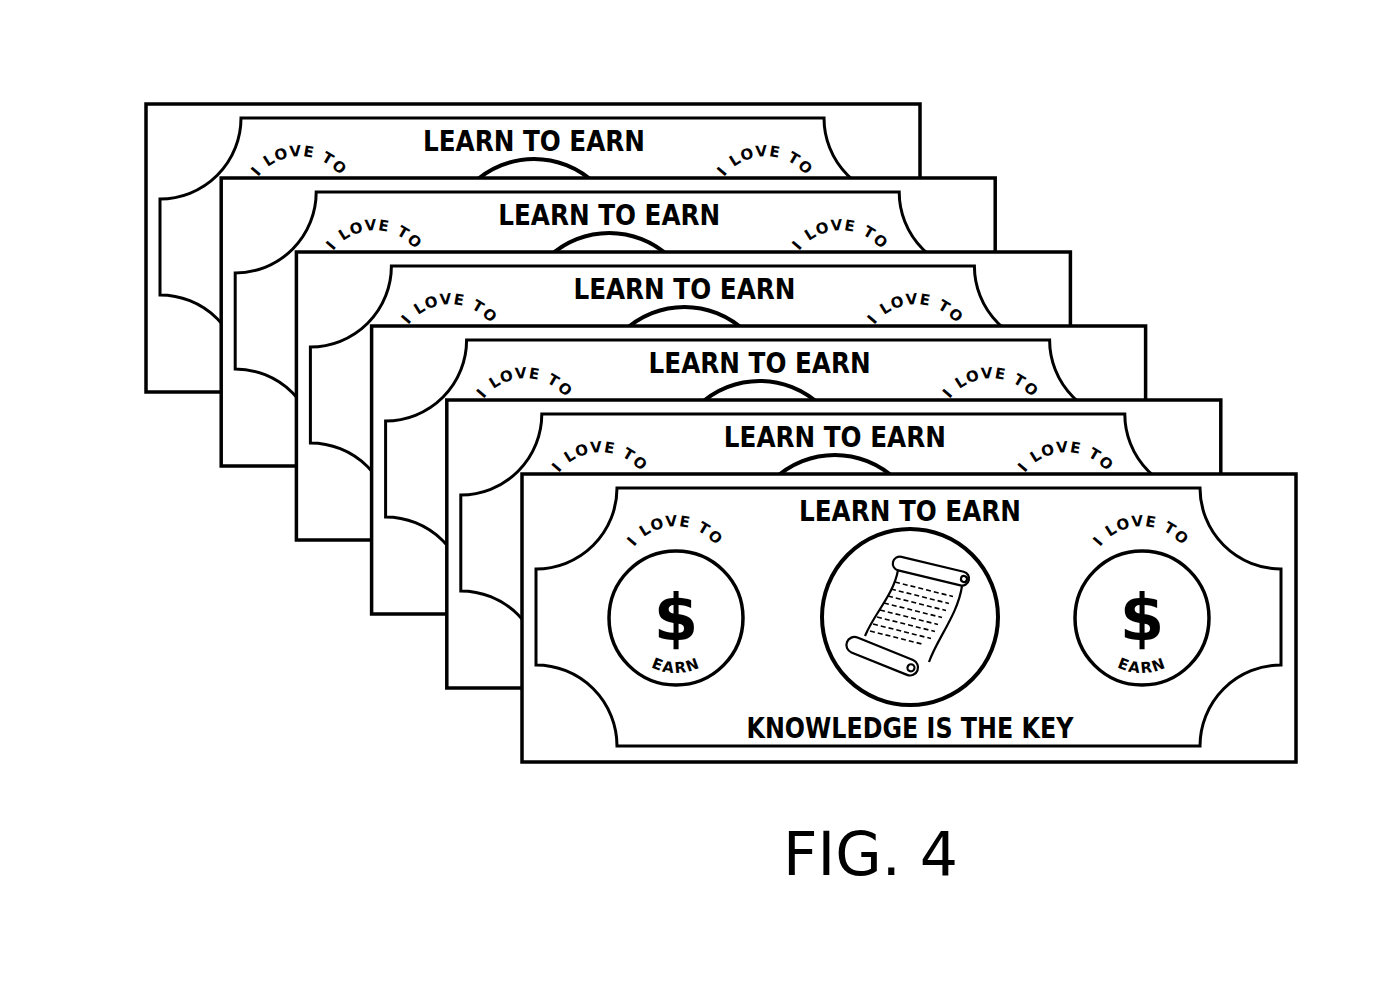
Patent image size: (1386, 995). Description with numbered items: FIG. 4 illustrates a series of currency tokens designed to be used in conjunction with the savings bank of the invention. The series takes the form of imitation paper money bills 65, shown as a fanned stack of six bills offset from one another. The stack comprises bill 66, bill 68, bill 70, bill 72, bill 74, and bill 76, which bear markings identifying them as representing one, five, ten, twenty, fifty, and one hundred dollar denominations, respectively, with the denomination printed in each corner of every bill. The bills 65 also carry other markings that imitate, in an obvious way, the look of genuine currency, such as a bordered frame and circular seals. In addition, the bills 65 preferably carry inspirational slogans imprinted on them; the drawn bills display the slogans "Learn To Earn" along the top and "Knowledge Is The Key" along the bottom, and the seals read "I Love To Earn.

The imitation paper money bills 65 is at (763, 400).
The bill 66 is at (1263, 593).
The bill 68 is at (1204, 406).
The bill 70 is at (1129, 332).
The bill 72 is at (1053, 258).
The bill 74 is at (978, 184).
The bill 76 is at (903, 110).